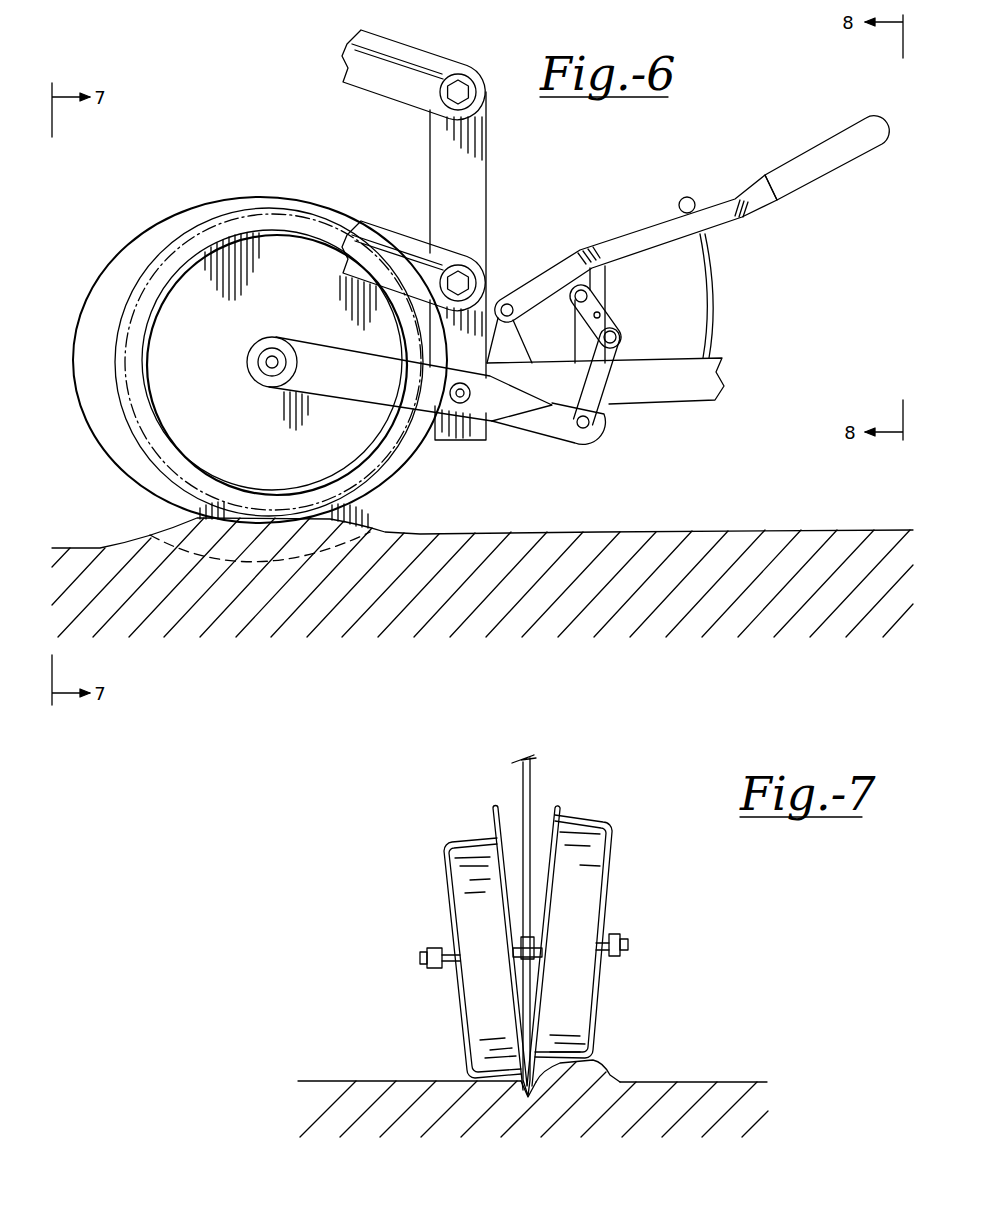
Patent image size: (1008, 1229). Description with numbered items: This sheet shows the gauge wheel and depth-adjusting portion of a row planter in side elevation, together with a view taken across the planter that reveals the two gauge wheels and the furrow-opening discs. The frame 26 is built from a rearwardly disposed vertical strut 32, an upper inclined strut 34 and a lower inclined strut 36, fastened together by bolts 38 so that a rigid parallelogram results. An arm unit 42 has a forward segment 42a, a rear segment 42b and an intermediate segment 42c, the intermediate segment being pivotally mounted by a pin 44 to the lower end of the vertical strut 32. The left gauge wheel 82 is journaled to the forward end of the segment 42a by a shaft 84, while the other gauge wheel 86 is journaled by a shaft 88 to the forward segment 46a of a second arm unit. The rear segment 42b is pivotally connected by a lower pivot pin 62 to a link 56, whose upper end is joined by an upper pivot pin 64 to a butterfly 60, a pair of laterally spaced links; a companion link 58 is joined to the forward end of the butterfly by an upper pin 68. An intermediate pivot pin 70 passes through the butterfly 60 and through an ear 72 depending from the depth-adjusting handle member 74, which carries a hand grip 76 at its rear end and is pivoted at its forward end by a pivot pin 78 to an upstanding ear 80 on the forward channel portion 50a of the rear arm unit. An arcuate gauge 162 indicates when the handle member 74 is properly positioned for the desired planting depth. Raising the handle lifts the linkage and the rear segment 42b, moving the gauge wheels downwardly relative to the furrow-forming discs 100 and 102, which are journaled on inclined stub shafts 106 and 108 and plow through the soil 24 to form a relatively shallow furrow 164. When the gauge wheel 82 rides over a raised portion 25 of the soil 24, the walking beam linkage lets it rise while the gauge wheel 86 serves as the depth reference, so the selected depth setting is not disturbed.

In FIG. 6, the soil 24 is at (522, 535).
In FIG. 7, the soil 24 is at (711, 1082).
In FIG. 6, the raised portion of the soil 25 is at (222, 520).
In FIG. 7, the raised portion of the soil 25 is at (594, 1060).
In FIG. 7, the frame 26 is at (521, 781).
In FIG. 6, the rearwardly disposed vertical strut 32 is at (487, 162).
In FIG. 6, the upper inclined strut 34 is at (375, 100).
In FIG. 6, the lower inclined strut 36 is at (375, 225).
In FIG. 6, the bolts 38 is at (463, 74).
In FIG. 6, the arm unit 42 is at (337, 347).
In FIG. 6, the forward segment of the arm unit 42a is at (347, 397).
In FIG. 7, the forward segment of the arm unit 42a is at (615, 933).
In FIG. 6, the rear segment of the arm unit 42b is at (553, 429).
In FIG. 6, the intermediate segment of the arm unit 42c is at (433, 442).
In FIG. 6, the pin or shaft 44 is at (460, 404).
In FIG. 7, the forward segment of the arm unit 46a is at (433, 931).
In FIG. 6, the forward channel portion of the rear arm unit 50a is at (677, 396).
In FIG. 6, the left link 56 is at (617, 380).
In FIG. 6, the right link 58 is at (575, 349).
In FIG. 6, the butterfly 60 is at (612, 322).
In FIG. 6, the lower pivot pin 62 is at (592, 443).
In FIG. 6, the upper pivot pin 64 is at (614, 330).
In FIG. 6, the upper pin 68 is at (577, 290).
In FIG. 6, the intermediate pivot pin 70 is at (613, 306).
In FIG. 6, the ear 72 is at (598, 283).
In FIG. 6, the depth-adjusting handle member 74 is at (759, 209).
In FIG. 6, the hand grip 76 is at (810, 148).
In FIG. 6, the pivot pin 78 is at (503, 303).
In FIG. 6, the upstanding ear 80 is at (514, 338).
In FIG. 6, the left gauge wheel 82 is at (177, 236).
In FIG. 7, the left gauge wheel 82 is at (608, 823).
In FIG. 6, the pin or shaft 84 is at (270, 350).
In FIG. 7, the pin or shaft 84 is at (627, 951).
In FIG. 7, the gauge wheel 86 is at (450, 850).
In FIG. 7, the pin or shaft 88 is at (427, 962).
In FIG. 6, the furrow-forming disc 100 is at (110, 281).
In FIG. 7, the furrow-forming disc 100 is at (548, 807).
In FIG. 7, the furrow-forming disc 102 is at (503, 813).
In FIG. 7, the stub shaft 106 is at (545, 910).
In FIG. 7, the stub shaft 108 is at (513, 985).
In FIG. 6, the arcuate gauge 162 is at (714, 334).
In FIG. 7, the furrow 164 is at (521, 1100).